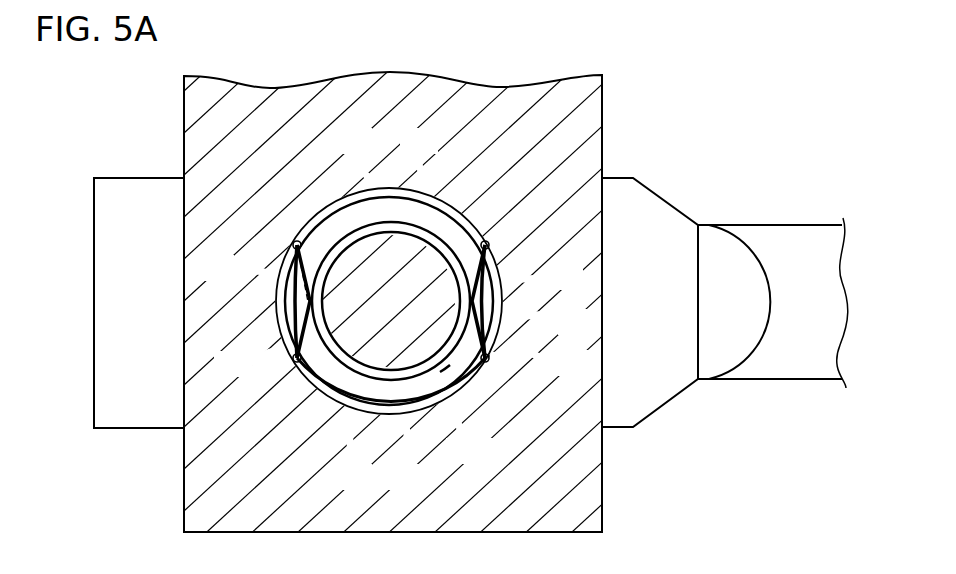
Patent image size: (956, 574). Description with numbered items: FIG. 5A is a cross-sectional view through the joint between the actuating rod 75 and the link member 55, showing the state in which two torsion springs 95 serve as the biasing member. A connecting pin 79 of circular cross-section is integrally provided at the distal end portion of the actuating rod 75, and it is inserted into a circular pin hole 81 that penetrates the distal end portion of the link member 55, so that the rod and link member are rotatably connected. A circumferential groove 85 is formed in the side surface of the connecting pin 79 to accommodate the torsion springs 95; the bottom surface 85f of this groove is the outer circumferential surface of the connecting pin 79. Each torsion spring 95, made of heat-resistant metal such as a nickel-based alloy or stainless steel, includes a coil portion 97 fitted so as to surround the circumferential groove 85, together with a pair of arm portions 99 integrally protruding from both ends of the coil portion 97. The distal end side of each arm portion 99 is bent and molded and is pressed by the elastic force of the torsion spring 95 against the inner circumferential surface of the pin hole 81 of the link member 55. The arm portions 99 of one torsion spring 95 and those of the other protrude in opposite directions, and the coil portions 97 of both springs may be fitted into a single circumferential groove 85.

The link member 55 is at (183, 120).
The actuating rod 75 is at (783, 230).
The connecting pin 79 is at (424, 207).
The circumferential groove 85 is at (388, 232).
The bottom surface of circumferential groove 85f is at (450, 365).
The torsion spring 95 is at (487, 317).
The coil portion 97 is at (398, 368).
The pin hole 81 is at (353, 391).
The arm portion 99 is at (297, 273).